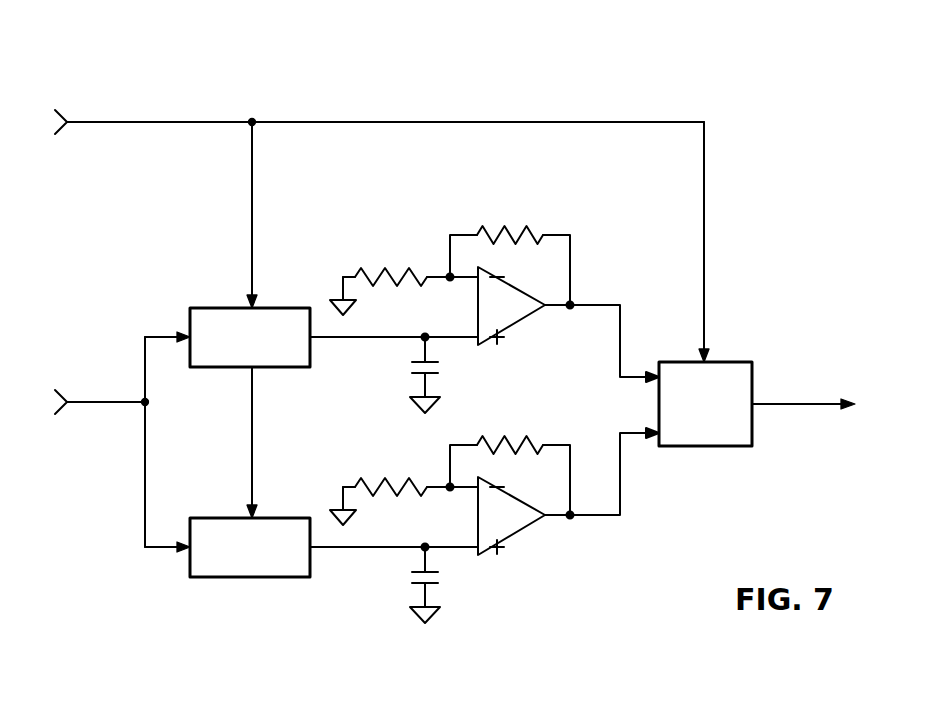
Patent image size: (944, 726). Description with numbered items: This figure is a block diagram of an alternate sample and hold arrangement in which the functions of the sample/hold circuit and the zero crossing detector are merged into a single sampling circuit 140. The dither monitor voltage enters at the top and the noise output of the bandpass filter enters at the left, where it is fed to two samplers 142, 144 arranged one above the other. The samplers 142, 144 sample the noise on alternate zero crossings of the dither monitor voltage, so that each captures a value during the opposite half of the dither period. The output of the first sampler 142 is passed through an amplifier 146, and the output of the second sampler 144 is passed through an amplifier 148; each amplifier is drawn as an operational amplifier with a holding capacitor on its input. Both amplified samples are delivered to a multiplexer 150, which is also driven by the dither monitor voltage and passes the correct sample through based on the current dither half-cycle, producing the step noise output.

The sampling circuit 140 is at (714, 81).
The sampler 142 is at (222, 308).
The sampler 144 is at (222, 518).
The amplifier 146 is at (510, 325).
The amplifier 148 is at (510, 535).
The multiplexer 150 is at (732, 362).